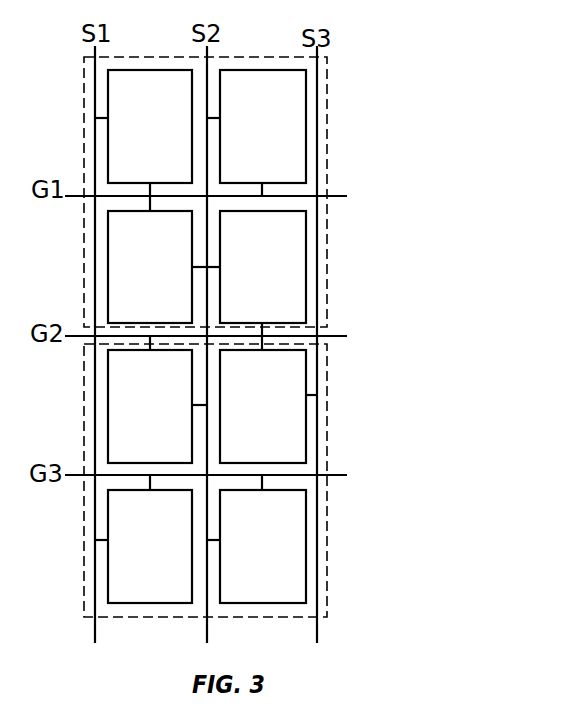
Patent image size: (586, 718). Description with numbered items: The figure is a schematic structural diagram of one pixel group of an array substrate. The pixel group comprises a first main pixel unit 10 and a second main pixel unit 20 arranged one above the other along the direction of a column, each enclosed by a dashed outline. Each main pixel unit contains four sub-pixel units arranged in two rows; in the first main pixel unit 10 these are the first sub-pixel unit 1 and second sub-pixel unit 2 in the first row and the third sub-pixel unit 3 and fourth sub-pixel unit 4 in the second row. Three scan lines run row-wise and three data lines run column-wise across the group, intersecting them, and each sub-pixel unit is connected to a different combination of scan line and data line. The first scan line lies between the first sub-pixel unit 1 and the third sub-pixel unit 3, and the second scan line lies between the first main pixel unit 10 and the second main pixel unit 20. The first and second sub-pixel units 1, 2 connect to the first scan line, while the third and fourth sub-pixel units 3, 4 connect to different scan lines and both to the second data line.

The first main pixel unit 10 is at (253, 193).
The second main pixel unit 20 is at (333, 437).
The first sub-pixel unit 1 is at (143, 133).
The second sub-pixel unit 2 is at (256, 133).
The third sub-pixel unit 3 is at (157, 259).
The fourth sub-pixel unit 4 is at (256, 273).